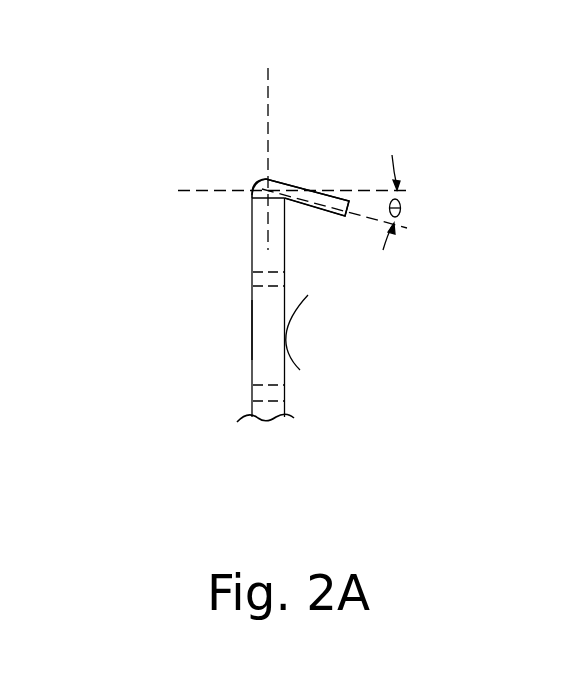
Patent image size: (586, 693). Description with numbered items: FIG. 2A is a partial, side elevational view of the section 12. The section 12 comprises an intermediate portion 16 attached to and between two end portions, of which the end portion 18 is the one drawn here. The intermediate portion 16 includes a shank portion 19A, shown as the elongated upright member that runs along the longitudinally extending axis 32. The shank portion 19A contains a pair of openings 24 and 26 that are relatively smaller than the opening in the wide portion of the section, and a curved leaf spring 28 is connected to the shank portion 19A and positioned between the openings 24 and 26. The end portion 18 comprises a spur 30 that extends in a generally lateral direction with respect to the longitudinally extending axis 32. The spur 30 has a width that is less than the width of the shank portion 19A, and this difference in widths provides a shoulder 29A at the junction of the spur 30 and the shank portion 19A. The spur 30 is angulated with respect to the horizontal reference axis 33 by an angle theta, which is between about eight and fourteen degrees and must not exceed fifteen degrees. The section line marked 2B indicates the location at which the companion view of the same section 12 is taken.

The surgical instrument 12 is at (128, 222).
The elongated shaft 16 is at (250, 353).
The distal tip 18 is at (260, 183).
The shaft portion 19A is at (255, 327).
The first marking 24 is at (256, 288).
The second marking 26 is at (256, 398).
The outer surface of shaft 28 is at (296, 317).
The bend 29A is at (257, 189).
The angled distal portion 30 is at (346, 216).
The longitudinal axis 32 is at (267, 93).
The bend angle reference 33 is at (350, 190).
The section line 2B is at (413, 82).